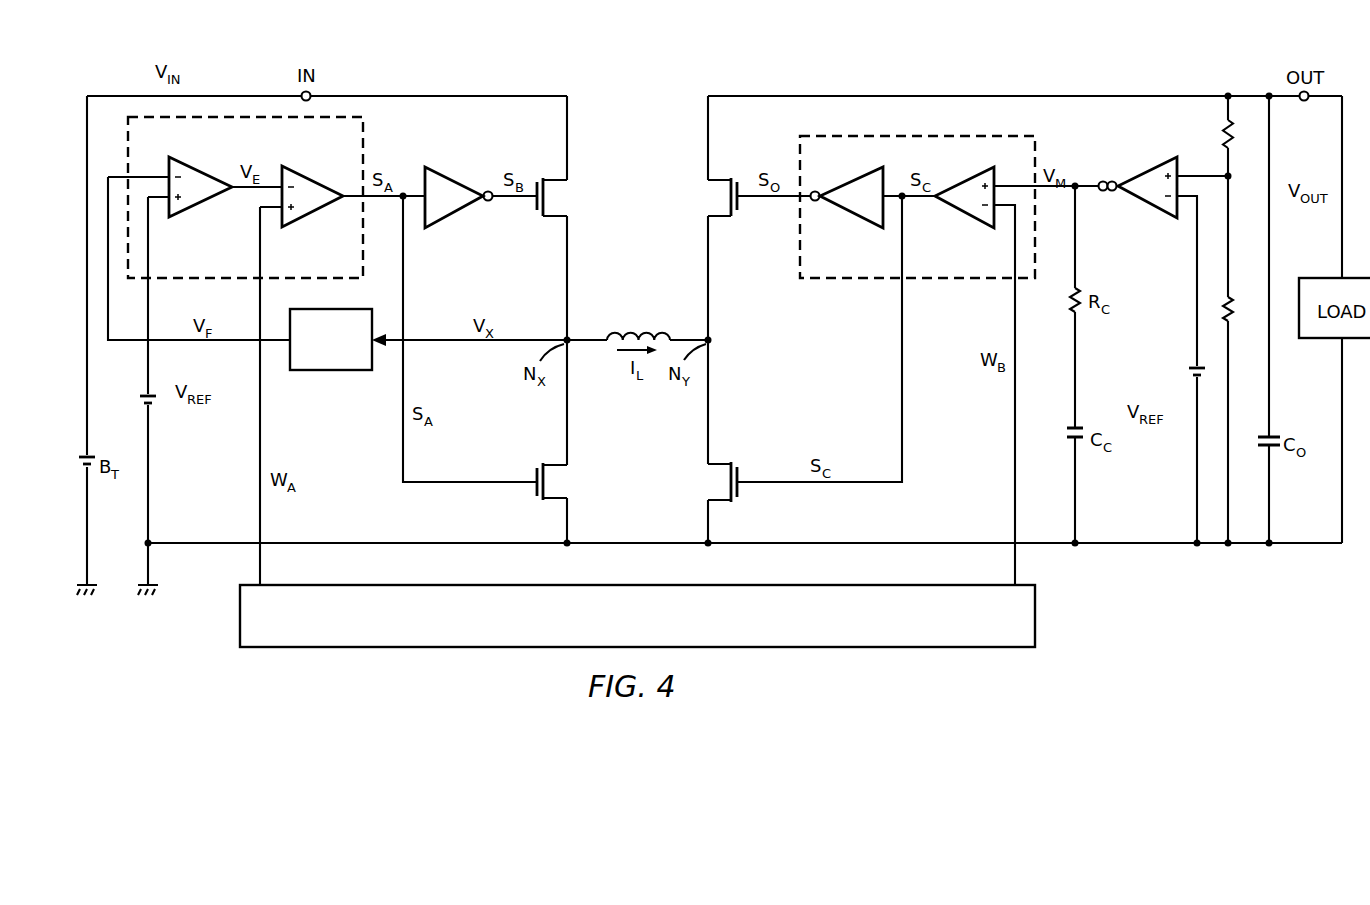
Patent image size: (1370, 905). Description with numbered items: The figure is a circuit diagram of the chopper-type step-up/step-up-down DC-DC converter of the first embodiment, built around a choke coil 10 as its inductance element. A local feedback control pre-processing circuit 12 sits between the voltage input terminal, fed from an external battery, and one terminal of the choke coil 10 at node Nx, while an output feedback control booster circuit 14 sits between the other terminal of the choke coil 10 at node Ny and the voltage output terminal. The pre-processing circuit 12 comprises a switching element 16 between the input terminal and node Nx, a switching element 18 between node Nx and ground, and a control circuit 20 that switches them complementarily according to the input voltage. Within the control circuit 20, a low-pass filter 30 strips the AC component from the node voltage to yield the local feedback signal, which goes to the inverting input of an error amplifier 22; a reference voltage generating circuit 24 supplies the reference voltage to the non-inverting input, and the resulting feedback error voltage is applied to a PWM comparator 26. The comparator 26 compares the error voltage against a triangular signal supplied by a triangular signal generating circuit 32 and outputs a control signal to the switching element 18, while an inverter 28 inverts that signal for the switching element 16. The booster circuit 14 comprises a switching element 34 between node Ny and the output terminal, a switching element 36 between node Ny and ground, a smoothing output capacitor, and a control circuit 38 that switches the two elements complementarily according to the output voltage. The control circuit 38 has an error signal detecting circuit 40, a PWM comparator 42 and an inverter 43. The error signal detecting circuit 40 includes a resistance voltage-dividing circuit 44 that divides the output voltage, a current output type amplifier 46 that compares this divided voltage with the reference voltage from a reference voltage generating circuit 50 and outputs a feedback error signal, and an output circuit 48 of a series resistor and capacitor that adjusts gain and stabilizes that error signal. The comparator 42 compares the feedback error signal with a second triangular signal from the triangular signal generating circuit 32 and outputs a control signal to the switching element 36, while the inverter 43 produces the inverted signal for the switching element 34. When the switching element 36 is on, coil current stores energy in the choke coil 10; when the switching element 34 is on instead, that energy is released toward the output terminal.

The choke coil 10 is at (645, 318).
The pre-processing circuit 12 is at (398, 74).
The booster circuit 14 is at (870, 74).
The switching element 16 is at (536, 212).
The switching element 18 is at (536, 494).
The control circuit 20 is at (213, 259).
The error amplifier 22 is at (204, 167).
The reference voltage generating circuit 24 is at (158, 401).
The PWM comparator 26 is at (313, 173).
The inverter 28 is at (458, 176).
The low-pass filter (LPF) 30 is at (332, 371).
The triangular signal generating circuit 32 is at (1037, 613).
The switching element 34 is at (739, 208).
The switching element 36 is at (739, 494).
The control circuit 38 is at (950, 106).
The error signal detecting circuit 40 is at (857, 290).
The PWM comparator 42 is at (960, 219).
The inverter 43 is at (848, 219).
The resistance voltage-dividing circuit 44 is at (1223, 136).
The current output type amplifier 46 is at (1147, 207).
The output circuit 48 is at (1076, 365).
The reference voltage generating circuit 50 is at (1188, 370).